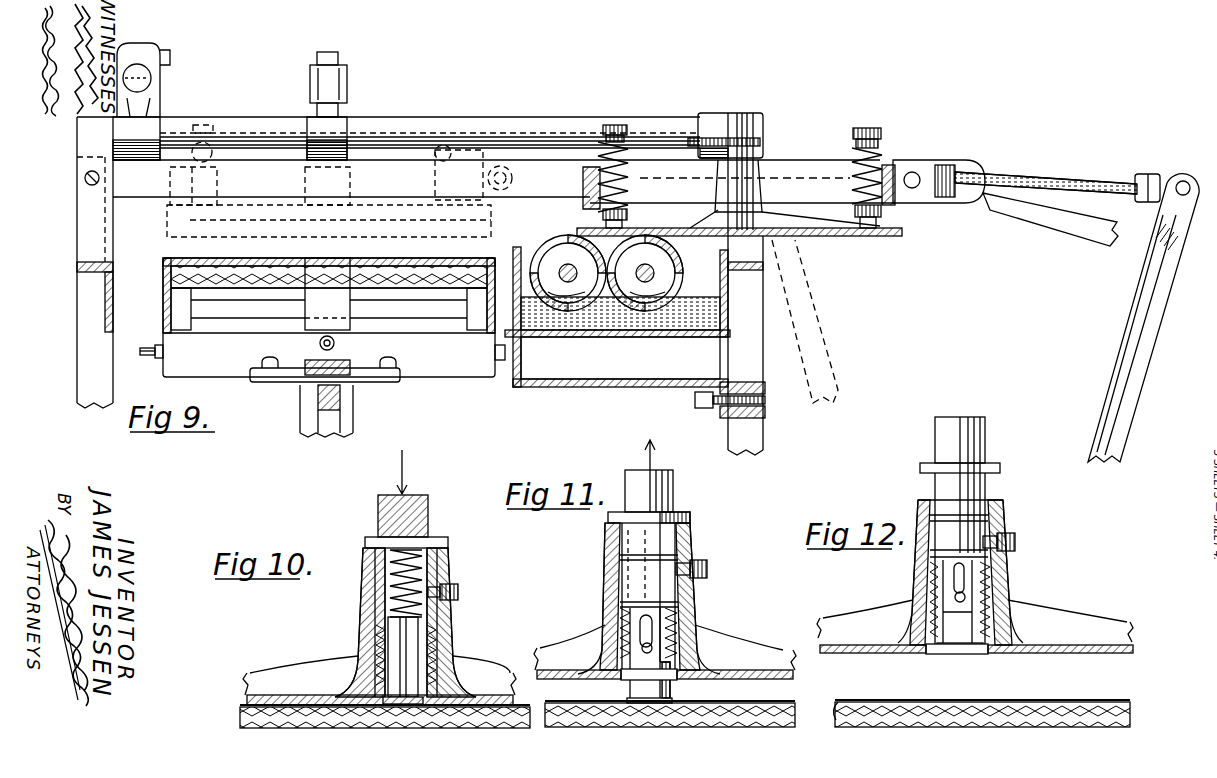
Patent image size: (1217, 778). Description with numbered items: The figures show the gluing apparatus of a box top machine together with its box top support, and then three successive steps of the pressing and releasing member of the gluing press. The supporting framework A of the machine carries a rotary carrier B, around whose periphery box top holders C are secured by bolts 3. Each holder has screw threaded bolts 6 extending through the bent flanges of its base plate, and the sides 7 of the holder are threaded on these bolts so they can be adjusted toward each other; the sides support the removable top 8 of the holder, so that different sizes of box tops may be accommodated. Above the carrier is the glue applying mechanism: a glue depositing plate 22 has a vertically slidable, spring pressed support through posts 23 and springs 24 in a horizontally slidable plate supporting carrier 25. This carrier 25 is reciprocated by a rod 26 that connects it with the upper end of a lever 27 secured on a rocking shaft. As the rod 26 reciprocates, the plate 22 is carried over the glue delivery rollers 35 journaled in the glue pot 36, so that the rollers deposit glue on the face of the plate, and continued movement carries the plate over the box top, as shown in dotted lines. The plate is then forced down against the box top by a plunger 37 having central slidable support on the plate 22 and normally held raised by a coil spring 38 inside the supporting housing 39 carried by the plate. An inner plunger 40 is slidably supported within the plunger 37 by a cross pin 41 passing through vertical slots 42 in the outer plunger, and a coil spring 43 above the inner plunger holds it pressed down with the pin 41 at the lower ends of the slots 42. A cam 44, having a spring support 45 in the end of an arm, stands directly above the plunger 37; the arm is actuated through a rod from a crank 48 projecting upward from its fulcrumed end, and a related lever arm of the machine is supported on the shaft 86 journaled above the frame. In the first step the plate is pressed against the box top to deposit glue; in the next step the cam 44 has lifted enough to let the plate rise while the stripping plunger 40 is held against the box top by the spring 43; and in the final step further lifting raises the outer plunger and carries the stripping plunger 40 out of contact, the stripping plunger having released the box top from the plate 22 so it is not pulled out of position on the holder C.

In FIG. 9, the supporting framework A is at (82, 220).
In FIG. 9, the rotary carrier B is at (346, 410).
In FIG. 9, the box top holder C is at (334, 317).
In FIG. 9, the bolts 3 is at (270, 360).
In FIG. 9, the screw threaded bolts 6 is at (156, 360).
In FIG. 9, the sides 7 is at (180, 300).
In FIG. 9, the removable top 8 is at (424, 280).
In FIG. 10, the removable top 8 is at (240, 718).
In FIG. 11, the removable top 8 is at (795, 713).
In FIG. 9, the glue depositing plate 22 is at (253, 240).
In FIG. 10, the glue depositing plate 22 is at (250, 700).
In FIG. 11, the glue depositing plate 22 is at (700, 666).
In FIG. 12, the glue depositing plate 22 is at (1076, 642).
In FIG. 9, the posts 23 is at (618, 124).
In FIG. 9, the springs 24 is at (632, 178).
In FIG. 9, the plate supporting carrier 25 is at (896, 202).
In FIG. 9, the rod 26 is at (1060, 183).
In FIG. 9, the lever 27 is at (1152, 294).
In FIG. 9, the glue delivery rollers 35 is at (546, 250).
In FIG. 9, the glue pot 36 is at (606, 326).
In FIG. 9, the plunger 37 is at (745, 113).
In FIG. 10, the plunger 37 is at (428, 517).
In FIG. 11, the plunger 37 is at (673, 498).
In FIG. 12, the plunger 37 is at (985, 442).
In FIG. 10, the coil spring 38 is at (362, 648).
In FIG. 11, the coil spring 38 is at (607, 622).
In FIG. 12, the coil spring 38 is at (1010, 568).
In FIG. 10, the supporting housing 39 is at (452, 628).
In FIG. 11, the supporting housing 39 is at (697, 600).
In FIG. 10, the inner plunger 40 is at (400, 672).
In FIG. 11, the inner plunger 40 is at (662, 688).
In FIG. 12, the inner plunger 40 is at (976, 650).
In FIG. 10, the cross pin 41 is at (453, 653).
In FIG. 11, the cross pin 41 is at (645, 648).
In FIG. 12, the cross pin 41 is at (1010, 598).
In FIG. 12, the vertical slots 42 is at (953, 579).
In FIG. 10, the coil spring 43 is at (422, 563).
In FIG. 9, the cam 44 is at (340, 114).
In FIG. 9, the spring support 45 is at (347, 82).
In FIG. 9, the crank 48 is at (160, 86).
In FIG. 9, the shaft 86 is at (497, 128).